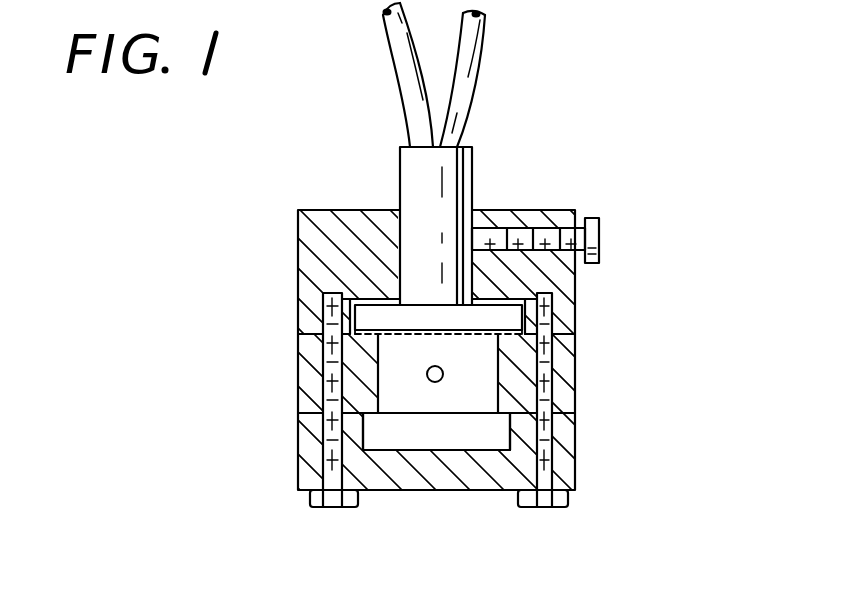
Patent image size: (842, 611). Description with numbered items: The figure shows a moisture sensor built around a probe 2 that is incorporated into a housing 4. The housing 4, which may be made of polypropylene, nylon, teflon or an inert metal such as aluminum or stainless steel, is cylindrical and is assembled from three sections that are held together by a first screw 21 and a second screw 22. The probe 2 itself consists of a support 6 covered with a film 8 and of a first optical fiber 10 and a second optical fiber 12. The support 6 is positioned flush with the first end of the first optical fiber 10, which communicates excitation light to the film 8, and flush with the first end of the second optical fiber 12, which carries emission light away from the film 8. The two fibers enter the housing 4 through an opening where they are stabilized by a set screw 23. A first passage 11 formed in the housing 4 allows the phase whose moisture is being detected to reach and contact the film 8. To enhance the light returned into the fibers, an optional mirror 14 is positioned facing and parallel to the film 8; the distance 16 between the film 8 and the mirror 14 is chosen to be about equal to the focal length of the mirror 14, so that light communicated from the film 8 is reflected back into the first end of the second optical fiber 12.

The probe 2 is at (437, 53).
The housing 4 is at (291, 455).
The support 6 is at (512, 322).
The film 8 is at (360, 334).
The first optical fiber 10 is at (467, 100).
The first passage 11 is at (442, 369).
The second optical fiber 12 is at (404, 102).
The mirror 14 is at (497, 431).
The distance 16 is at (420, 345).
The first screw 21 is at (310, 507).
The second screw 22 is at (562, 507).
The set screw 23 is at (599, 228).